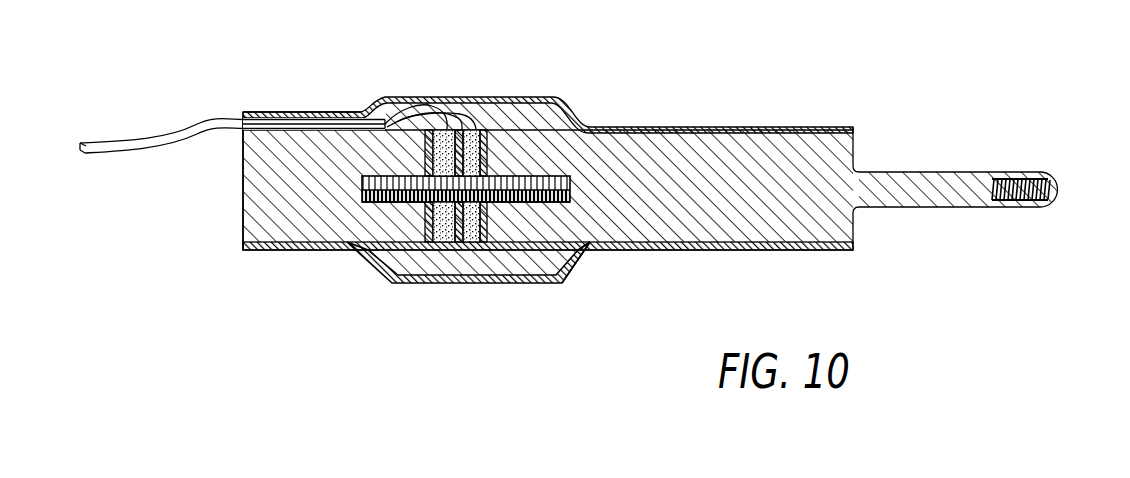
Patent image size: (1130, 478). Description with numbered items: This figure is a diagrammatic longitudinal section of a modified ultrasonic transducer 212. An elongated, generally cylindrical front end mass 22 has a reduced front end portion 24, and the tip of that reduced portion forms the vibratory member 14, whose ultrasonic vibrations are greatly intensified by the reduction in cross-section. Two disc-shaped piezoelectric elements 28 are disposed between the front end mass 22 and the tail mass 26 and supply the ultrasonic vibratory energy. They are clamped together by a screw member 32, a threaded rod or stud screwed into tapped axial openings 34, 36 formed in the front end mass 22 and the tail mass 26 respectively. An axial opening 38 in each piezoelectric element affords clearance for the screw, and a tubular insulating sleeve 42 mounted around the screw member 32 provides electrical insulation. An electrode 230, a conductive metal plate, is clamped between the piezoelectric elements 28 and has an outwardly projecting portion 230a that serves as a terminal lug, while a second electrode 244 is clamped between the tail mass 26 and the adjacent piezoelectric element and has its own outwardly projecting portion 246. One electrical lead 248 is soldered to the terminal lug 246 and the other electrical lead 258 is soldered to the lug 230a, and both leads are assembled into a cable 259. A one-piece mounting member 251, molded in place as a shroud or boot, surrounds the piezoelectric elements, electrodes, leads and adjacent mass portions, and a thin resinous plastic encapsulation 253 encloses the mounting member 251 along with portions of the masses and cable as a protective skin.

The vibratory member 14 is at (1053, 178).
The front end mass 22 is at (790, 218).
The front end portion 24 is at (945, 196).
The tail mass 26 is at (287, 213).
The piezoelectric elements 28 is at (443, 230).
The screw member 32 is at (363, 203).
The tapped axial opening 34 is at (580, 203).
The tapped axial opening 36 is at (370, 180).
The axial opening 38 is at (430, 160).
The insulating sleeve 42 is at (582, 248).
The ultrasonic transducer 212 is at (890, 129).
The electrode 230 is at (470, 244).
The outwardly projecting portion 230a is at (470, 110).
The electrode 244 is at (427, 228).
The outwardly projecting portion 246 is at (412, 108).
The electrical lead 248 is at (350, 133).
The mounting member 251 is at (568, 275).
The encapsulation 253 is at (758, 128).
The electrical lead 258 is at (428, 105).
The cable 259 is at (140, 145).